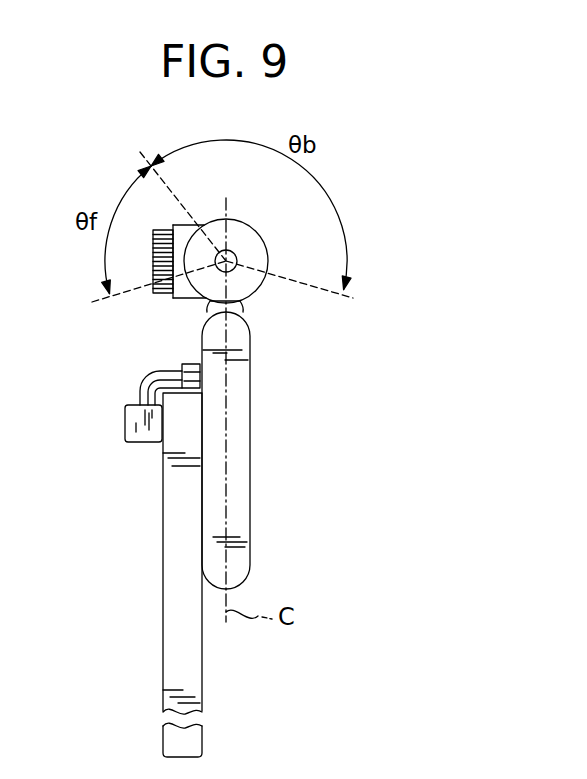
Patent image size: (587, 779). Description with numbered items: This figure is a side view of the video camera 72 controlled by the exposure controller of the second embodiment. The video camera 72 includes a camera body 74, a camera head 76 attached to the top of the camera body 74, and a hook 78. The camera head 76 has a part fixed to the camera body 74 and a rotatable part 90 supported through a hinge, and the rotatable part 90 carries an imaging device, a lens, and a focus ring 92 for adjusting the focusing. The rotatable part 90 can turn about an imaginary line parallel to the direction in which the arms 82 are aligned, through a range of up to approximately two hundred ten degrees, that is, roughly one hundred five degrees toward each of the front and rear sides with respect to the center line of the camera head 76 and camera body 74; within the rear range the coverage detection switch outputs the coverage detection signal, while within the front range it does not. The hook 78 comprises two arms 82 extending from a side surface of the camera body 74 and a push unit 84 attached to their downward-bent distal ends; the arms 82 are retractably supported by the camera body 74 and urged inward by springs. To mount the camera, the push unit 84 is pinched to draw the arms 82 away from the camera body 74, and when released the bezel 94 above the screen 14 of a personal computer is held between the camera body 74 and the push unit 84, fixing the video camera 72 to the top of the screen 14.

The screen 14 is at (163, 548).
The video camera 72 is at (378, 355).
The camera body 74 is at (250, 522).
The camera head 76 is at (266, 228).
The hook 78 is at (128, 382).
The arms 82 is at (160, 372).
The push unit 84 is at (125, 420).
The rotatable part 90 is at (235, 233).
The focus ring 92 is at (167, 230).
The bezel 94 is at (185, 422).